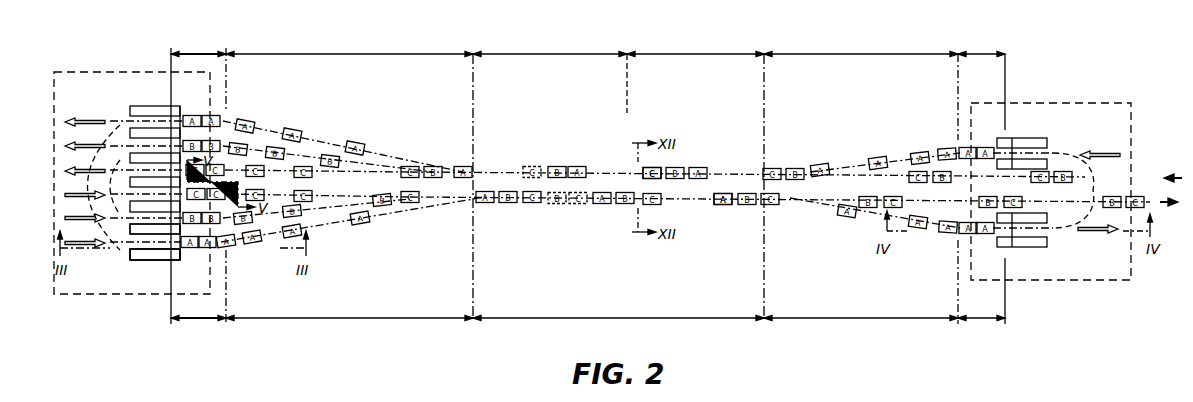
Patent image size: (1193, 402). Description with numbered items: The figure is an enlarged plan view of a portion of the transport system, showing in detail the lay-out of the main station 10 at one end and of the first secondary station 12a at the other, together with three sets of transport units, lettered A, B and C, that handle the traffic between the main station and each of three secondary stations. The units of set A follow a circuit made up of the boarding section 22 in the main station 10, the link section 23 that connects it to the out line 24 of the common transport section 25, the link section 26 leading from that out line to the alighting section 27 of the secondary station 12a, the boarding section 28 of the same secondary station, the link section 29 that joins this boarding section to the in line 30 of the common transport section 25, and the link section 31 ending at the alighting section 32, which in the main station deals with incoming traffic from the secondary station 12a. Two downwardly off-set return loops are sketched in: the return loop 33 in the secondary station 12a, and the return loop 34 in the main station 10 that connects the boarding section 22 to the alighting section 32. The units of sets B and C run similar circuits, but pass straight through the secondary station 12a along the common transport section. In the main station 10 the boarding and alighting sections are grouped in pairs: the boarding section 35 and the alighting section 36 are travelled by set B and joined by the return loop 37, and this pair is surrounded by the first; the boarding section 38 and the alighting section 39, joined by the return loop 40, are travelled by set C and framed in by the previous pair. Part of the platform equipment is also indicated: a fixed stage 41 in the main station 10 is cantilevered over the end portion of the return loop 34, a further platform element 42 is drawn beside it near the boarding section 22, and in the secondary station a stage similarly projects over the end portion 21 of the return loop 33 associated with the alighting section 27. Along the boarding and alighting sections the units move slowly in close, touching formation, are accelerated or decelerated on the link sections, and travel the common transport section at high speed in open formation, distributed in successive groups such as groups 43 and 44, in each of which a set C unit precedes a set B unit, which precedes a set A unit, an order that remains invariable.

The main station 10 is at (132, 183).
The first secondary station 12a is at (1051, 191).
The end portion of the return loop 21 is at (1033, 240).
The boarding section 22 is at (198, 344).
The link section 23 is at (349, 326).
The out line 24 is at (715, 204).
The common transport section 25 is at (618, 326).
The link section 26 is at (861, 326).
The alighting section 27 is at (981, 327).
The boarding section 28 is at (981, 47).
The link section 29 is at (861, 46).
The in line 30 is at (608, 170).
The link section 31 is at (349, 46).
The alighting section 32 is at (198, 28).
The return loop 33 is at (1067, 158).
The return loop 34 is at (117, 243).
The boarding section 35 is at (198, 335).
The alighting section 36 is at (198, 37).
The return loop 37 is at (111, 245).
The boarding section 38 is at (198, 326).
The alighting section 39 is at (198, 47).
The return loop 40 is at (111, 221).
The fixed stage 41 is at (160, 252).
The stack 42 is at (137, 254).
The group of units 43 is at (550, 46).
The group of units 44 is at (695, 46).